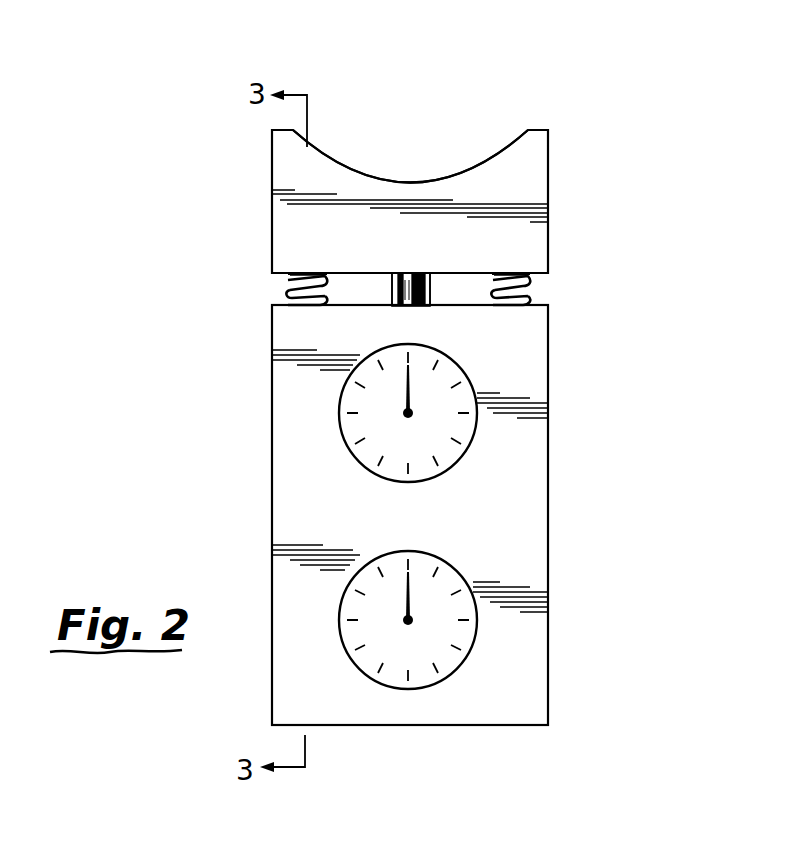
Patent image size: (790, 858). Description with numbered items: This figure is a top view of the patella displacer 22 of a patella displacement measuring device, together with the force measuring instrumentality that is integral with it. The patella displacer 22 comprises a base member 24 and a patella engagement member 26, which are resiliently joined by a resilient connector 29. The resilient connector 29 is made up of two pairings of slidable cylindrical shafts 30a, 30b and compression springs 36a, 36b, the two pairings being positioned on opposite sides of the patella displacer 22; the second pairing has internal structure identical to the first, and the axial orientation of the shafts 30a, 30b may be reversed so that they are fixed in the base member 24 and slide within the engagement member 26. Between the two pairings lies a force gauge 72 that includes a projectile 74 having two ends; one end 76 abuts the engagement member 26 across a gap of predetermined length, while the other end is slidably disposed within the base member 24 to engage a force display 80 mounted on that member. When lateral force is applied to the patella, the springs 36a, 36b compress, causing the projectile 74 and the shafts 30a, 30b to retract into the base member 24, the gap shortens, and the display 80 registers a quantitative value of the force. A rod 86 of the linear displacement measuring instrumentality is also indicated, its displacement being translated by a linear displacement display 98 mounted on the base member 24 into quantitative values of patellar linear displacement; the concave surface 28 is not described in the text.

The patella displacer 22 is at (548, 408).
The base member 24 is at (548, 566).
The patella engagement member 26 is at (540, 176).
The concave bearing surface 28 is at (355, 175).
The resilient connector 29 is at (530, 293).
The slidable cylindrical shaft 30a is at (288, 300).
The slidable cylindrical shaft 30b is at (528, 305).
The compression spring 36a is at (288, 288).
The compression spring 36b is at (528, 283).
The force gauge 72 is at (421, 290).
The projectile 74 is at (430, 297).
The end of projectile 76 is at (403, 273).
The force display 80 is at (472, 445).
The rod 86 is at (392, 294).
The linear displacement display 98 is at (472, 645).